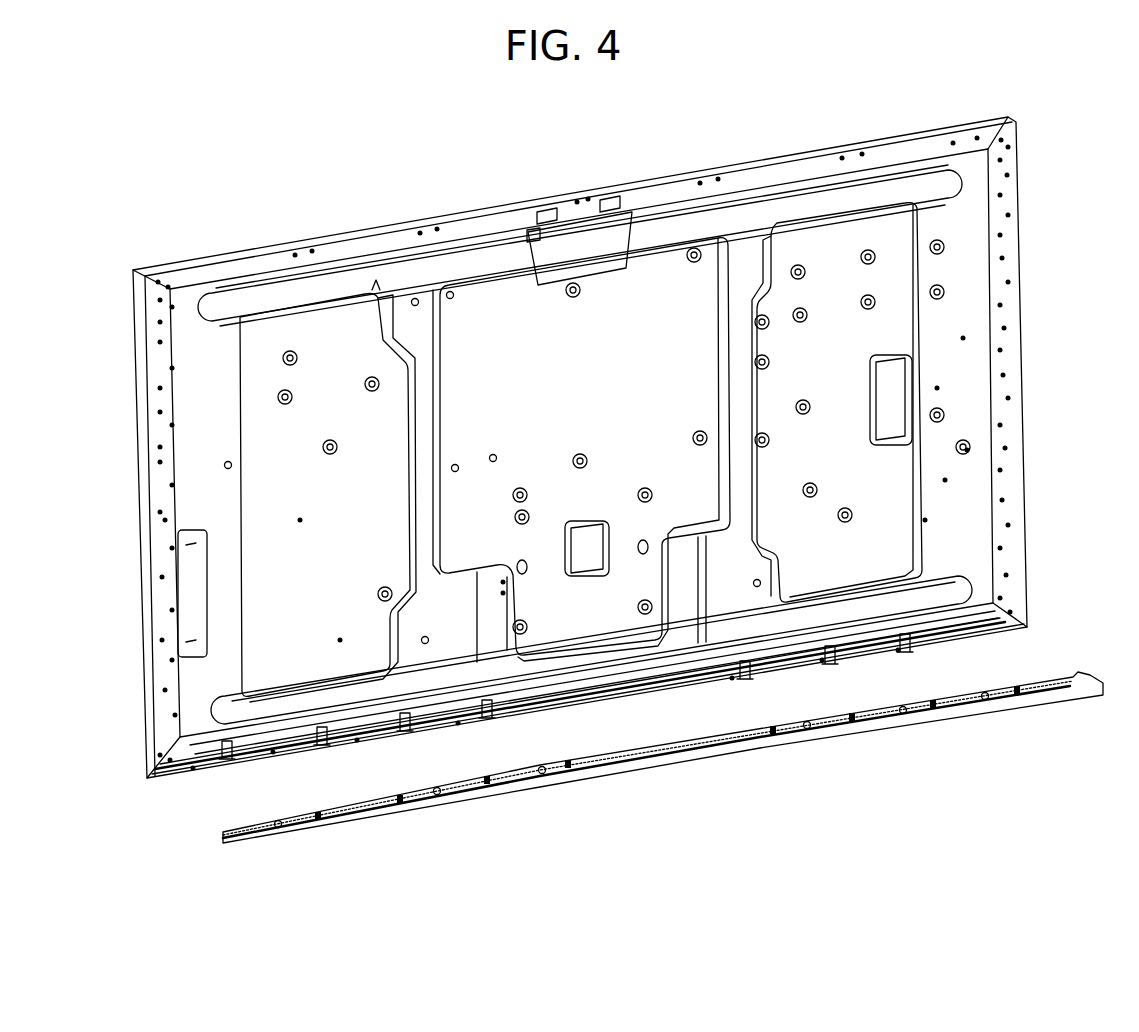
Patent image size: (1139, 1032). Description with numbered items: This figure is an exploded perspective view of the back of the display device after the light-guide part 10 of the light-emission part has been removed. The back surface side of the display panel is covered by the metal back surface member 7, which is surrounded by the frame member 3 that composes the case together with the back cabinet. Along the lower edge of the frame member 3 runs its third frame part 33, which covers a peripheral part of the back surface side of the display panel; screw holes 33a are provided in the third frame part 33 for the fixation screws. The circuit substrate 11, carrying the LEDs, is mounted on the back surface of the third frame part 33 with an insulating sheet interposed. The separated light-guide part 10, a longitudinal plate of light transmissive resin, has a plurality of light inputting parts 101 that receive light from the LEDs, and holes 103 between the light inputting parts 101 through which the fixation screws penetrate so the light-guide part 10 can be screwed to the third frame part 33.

The frame member 3 is at (997, 340).
The back surface member 7 is at (210, 333).
The light-guide part 10 is at (677, 767).
The circuit substrate 11 is at (193, 747).
The third frame part 33 is at (210, 717).
The screw holes 33a is at (193, 772).
The light inputting parts 101 is at (400, 807).
The holes 103 is at (278, 828).